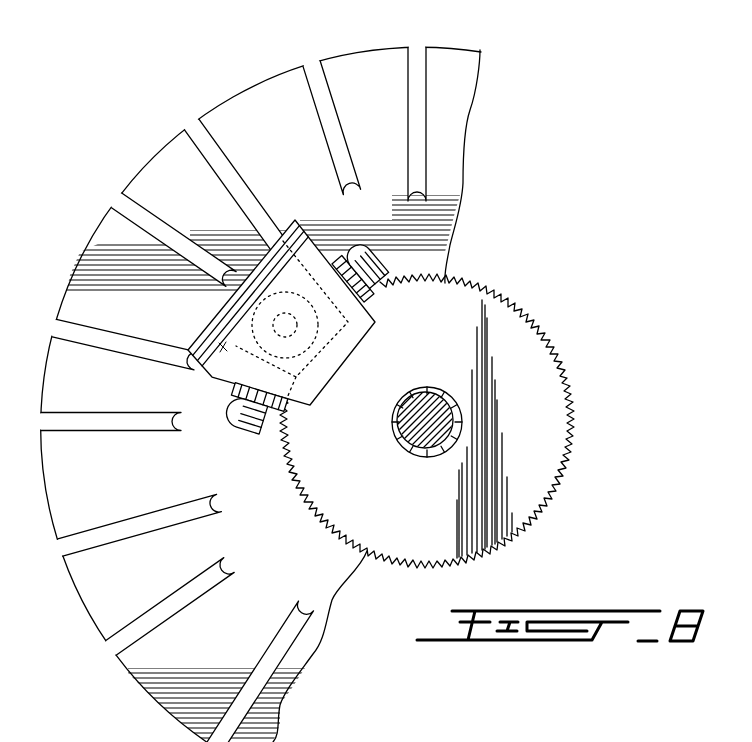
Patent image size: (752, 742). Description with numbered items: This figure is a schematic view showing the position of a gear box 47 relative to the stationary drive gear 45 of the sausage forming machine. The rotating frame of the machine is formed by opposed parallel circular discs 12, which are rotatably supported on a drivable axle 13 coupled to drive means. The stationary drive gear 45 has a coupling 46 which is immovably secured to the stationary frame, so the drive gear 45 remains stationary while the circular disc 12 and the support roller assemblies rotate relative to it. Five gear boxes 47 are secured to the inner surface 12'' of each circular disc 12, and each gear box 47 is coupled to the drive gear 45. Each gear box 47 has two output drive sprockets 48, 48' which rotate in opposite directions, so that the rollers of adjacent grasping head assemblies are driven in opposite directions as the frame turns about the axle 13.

The circular disc 12 is at (259, 394).
The inner surface of circular disc 12'' is at (271, 152).
The drivable axle 13 is at (463, 423).
The stationary drive gear 45 is at (513, 342).
The coupling 46 is at (407, 452).
The gear box 47 is at (203, 366).
The output drive sprocket 48 is at (380, 295).
The output drive sprocket 48' is at (237, 433).